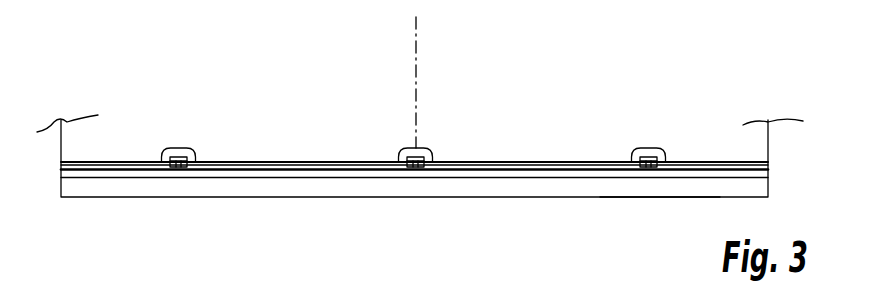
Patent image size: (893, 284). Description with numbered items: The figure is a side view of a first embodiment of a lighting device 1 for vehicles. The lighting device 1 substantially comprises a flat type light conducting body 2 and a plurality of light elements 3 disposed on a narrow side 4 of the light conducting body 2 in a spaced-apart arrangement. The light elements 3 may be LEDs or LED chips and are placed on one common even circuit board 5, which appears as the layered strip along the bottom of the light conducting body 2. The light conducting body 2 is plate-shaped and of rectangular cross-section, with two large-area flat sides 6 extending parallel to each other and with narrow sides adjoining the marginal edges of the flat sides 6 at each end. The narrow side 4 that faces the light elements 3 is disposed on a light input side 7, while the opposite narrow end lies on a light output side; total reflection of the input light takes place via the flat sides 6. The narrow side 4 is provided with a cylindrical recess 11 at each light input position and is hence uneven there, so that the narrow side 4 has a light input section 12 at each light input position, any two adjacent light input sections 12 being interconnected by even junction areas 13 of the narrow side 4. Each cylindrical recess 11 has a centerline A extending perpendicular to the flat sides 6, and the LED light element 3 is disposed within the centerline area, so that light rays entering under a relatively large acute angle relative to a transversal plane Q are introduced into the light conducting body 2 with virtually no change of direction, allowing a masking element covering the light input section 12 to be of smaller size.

The lighting device 1 is at (110, 212).
The flat type light conducting body 2 is at (768, 141).
The light element 3 is at (178, 168).
The narrow side 4 is at (456, 163).
The circuit board 5 is at (290, 178).
The flat side 6 is at (522, 144).
The light input side 7 is at (663, 212).
The cylindrical recess 11 is at (408, 156).
The light input section 12 is at (197, 118).
The junction area 13 is at (306, 125).
The centerline A is at (179, 150).
The transversal plane Q is at (416, 45).